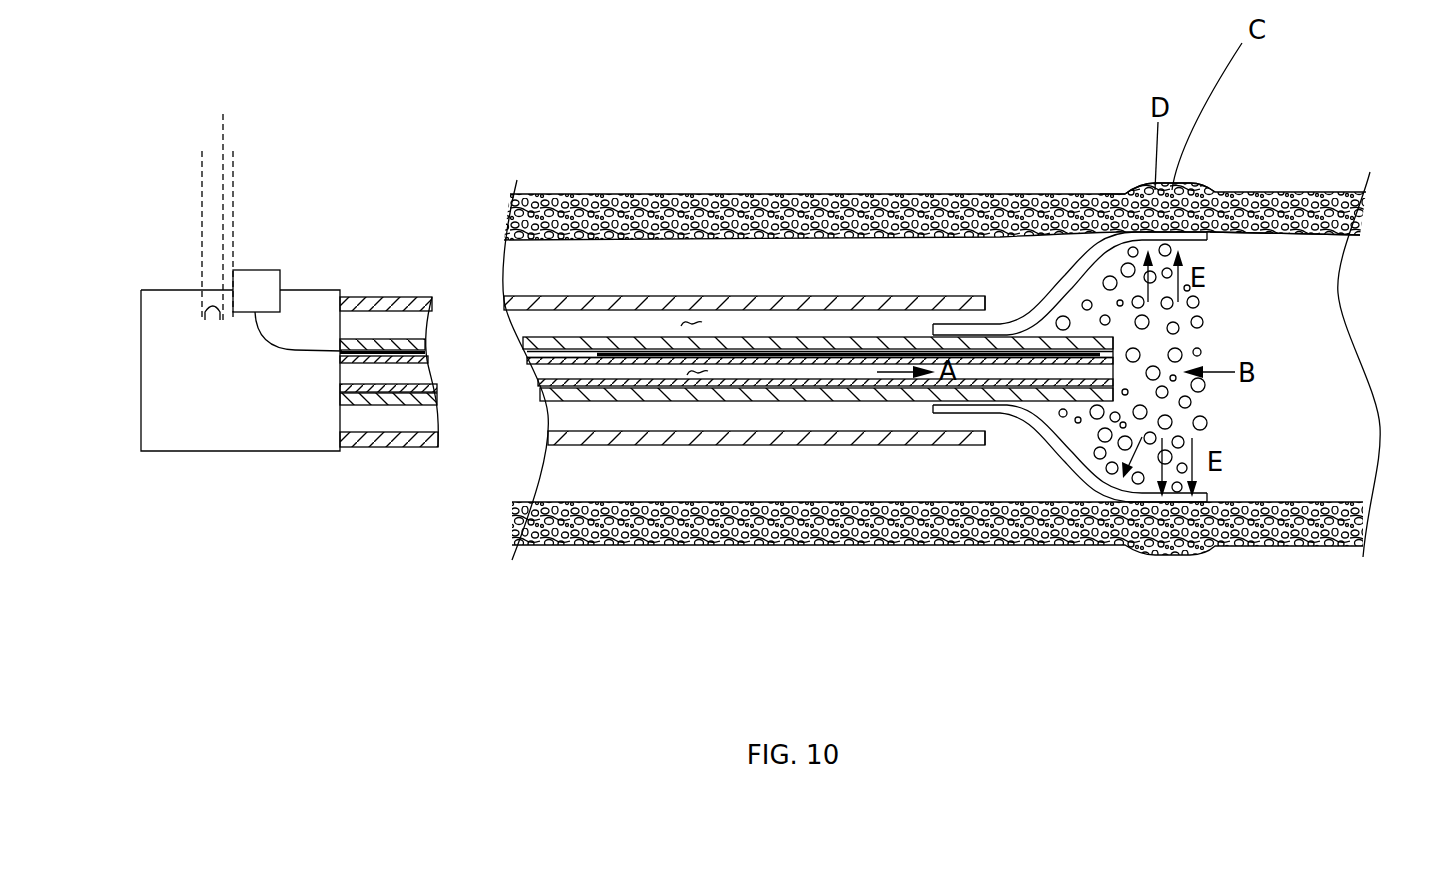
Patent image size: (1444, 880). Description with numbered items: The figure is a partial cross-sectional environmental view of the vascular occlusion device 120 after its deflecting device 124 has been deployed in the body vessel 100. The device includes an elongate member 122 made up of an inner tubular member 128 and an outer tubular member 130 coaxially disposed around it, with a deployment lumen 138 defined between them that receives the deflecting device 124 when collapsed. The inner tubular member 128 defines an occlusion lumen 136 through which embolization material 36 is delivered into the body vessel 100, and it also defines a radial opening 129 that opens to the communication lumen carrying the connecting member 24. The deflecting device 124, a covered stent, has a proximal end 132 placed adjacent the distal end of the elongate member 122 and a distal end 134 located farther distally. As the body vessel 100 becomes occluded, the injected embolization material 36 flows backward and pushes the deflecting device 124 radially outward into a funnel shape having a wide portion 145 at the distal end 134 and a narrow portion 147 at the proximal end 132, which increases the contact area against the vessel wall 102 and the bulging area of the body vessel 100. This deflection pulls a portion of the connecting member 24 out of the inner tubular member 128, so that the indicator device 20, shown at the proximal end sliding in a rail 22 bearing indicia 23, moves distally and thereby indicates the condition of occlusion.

The indicator device 20 is at (255, 269).
The rail 22 is at (219, 321).
The indicia 23 is at (203, 320).
The connecting member 24 is at (332, 352).
The body vessel 100 is at (1290, 190).
The vessel wall 102 is at (1317, 235).
The vascular occlusion device 120 is at (625, 268).
The elongate member 122 is at (845, 296).
The deflecting device 124 is at (1060, 282).
The inner tubular member 128 is at (627, 401).
The radial opening 129 is at (1108, 333).
The outer tubular member 130 is at (876, 447).
The proximal end of the deflecting device 132 is at (998, 420).
The distal end of the deflecting device 134 is at (1208, 190).
The occlusion lumen 136 is at (693, 373).
The deployment lumen 138 is at (692, 323).
The wide portion 145 is at (1103, 190).
The narrow portion 147 is at (987, 295).
The embolization material 36 is at (1187, 392).